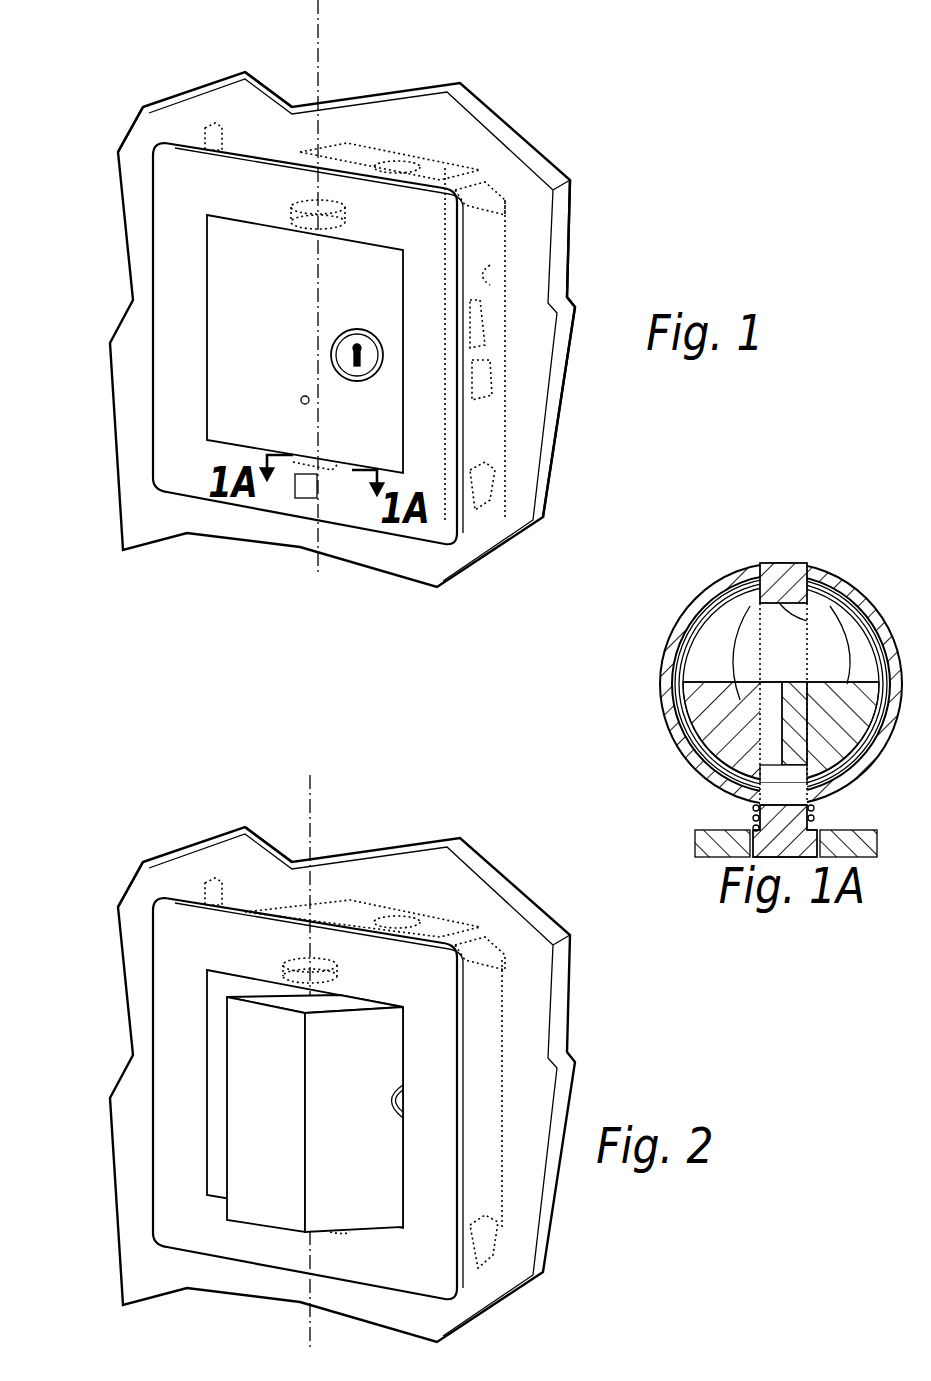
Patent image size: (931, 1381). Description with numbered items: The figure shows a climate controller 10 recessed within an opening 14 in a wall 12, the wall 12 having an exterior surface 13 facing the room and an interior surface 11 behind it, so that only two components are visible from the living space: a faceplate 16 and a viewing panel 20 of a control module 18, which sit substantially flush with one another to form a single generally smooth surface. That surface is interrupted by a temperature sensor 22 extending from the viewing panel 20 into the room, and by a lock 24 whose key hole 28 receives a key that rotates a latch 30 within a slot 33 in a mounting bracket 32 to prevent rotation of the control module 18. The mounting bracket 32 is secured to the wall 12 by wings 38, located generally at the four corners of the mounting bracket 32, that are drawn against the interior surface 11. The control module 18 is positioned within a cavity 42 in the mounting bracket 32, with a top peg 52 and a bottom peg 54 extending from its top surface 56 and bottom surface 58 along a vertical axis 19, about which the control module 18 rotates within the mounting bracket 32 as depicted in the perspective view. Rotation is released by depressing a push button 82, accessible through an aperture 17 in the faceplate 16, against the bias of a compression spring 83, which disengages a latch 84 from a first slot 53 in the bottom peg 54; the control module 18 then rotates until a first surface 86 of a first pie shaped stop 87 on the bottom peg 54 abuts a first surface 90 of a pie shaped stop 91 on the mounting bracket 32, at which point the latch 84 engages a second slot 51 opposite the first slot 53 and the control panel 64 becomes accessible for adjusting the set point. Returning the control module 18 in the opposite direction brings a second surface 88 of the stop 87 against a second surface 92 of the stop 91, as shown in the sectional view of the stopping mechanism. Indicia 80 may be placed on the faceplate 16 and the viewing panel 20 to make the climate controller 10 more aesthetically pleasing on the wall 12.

In FIG. 1, the climate controller 10 is at (206, 272).
In FIG. 1, the interior surface 11 is at (272, 78).
In FIG. 2, the interior surface 11 is at (272, 832).
In FIG. 1, the wall 12 is at (428, 133).
In FIG. 2, the wall 12 is at (562, 972).
In FIG. 1, the exterior surface 13 is at (187, 172).
In FIG. 2, the exterior surface 13 is at (190, 870).
In FIG. 1, the opening 14 is at (490, 285).
In FIG. 1, the faceplate 16 is at (148, 146).
In FIG. 1A, the faceplate 16 is at (710, 857).
In FIG. 2, the faceplate 16 is at (170, 915).
In FIG. 1A, the aperture 17 is at (752, 830).
In FIG. 1, the control module 18 is at (235, 318).
In FIG. 2, the control module 18 is at (255, 1148).
In FIG. 1, the vertical axis 19 is at (320, 25).
In FIG. 2, the vertical axis 19 is at (313, 807).
In FIG. 1, the viewing panel 20 is at (218, 233).
In FIG. 2, the viewing panel 20 is at (340, 1020).
In FIG. 1, the temperature sensor 22 is at (372, 360).
In FIG. 1, the lock 24 is at (372, 354).
In FIG. 1, the key hole 28 is at (309, 403).
In FIG. 1, the latch 30 is at (492, 378).
In FIG. 1, the mounting bracket 32 is at (473, 252).
In FIG. 1, the slot 33 is at (485, 325).
In FIG. 1, the wings 38 is at (210, 128).
In FIG. 2, the cavity 42 is at (217, 987).
In FIG. 1A, the second slot 51 is at (793, 777).
In FIG. 1, the top peg 52 is at (372, 205).
In FIG. 2, the top peg 52 is at (360, 965).
In FIG. 1A, the first slot 53 is at (807, 620).
In FIG. 1, the bottom peg 54 is at (333, 470).
In FIG. 1A, the bottom peg 54 is at (740, 752).
In FIG. 2, the bottom peg 54 is at (345, 1235).
In FIG. 2, the top surface 56 is at (283, 1000).
In FIG. 2, the bottom surface 58 is at (268, 1233).
In FIG. 2, the control panel 64 is at (225, 1093).
In FIG. 1, the indicia 80 is at (172, 440).
In FIG. 1, the push button 82 is at (292, 483).
In FIG. 1A, the push button 82 is at (877, 846).
In FIG. 1A, the compression spring 83 is at (752, 810).
In FIG. 1A, the latch 84 is at (778, 563).
In FIG. 1A, the first surface 86 is at (740, 612).
In FIG. 1A, the first pie shaped stop 87 is at (738, 720).
In FIG. 1A, the second surface 88 is at (692, 700).
In FIG. 1A, the first surface 90 is at (808, 622).
In FIG. 1A, the pie shaped stop 91 is at (865, 614).
In FIG. 1A, the second surface 92 is at (848, 783).